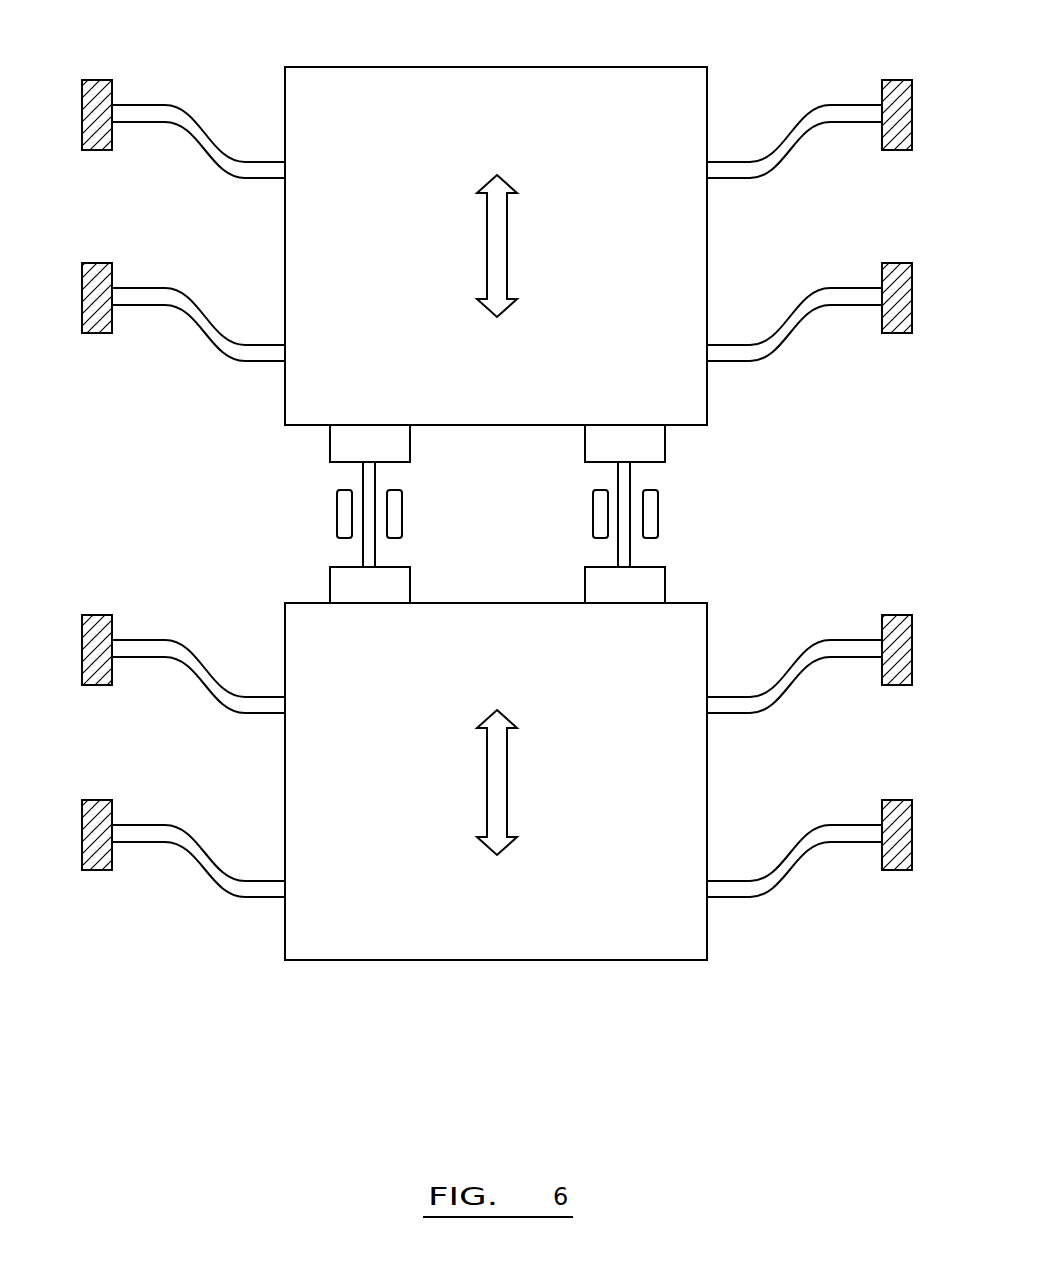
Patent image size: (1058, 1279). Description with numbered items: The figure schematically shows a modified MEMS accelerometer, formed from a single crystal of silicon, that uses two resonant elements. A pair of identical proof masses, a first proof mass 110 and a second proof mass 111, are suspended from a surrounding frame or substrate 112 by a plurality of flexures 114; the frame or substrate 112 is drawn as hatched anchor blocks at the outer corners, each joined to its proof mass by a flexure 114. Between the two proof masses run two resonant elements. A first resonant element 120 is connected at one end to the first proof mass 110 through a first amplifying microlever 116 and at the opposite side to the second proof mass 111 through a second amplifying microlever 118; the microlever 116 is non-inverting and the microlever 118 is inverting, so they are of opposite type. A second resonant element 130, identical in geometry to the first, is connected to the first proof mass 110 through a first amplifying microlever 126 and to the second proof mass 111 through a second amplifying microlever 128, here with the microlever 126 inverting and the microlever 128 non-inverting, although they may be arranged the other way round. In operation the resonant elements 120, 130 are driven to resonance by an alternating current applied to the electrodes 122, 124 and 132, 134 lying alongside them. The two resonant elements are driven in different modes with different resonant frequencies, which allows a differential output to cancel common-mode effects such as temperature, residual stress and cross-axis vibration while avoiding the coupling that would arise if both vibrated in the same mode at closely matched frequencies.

The first proof mass 110 is at (688, 923).
The second proof mass 111 is at (688, 388).
The surrounding frame or substrate 112 is at (100, 95).
The flexures 114 is at (170, 110).
The first amplifying microlever 116 is at (655, 585).
The second amplifying microlever 118 is at (652, 440).
The first resonant element 120 is at (618, 553).
The electrode 122 is at (594, 510).
The electrode 124 is at (658, 510).
The first amplifying microlever 126 is at (345, 585).
The second amplifying microlever 128 is at (340, 440).
The second resonant element 130 is at (375, 553).
The electrode 132 is at (336, 510).
The electrode 134 is at (402, 510).